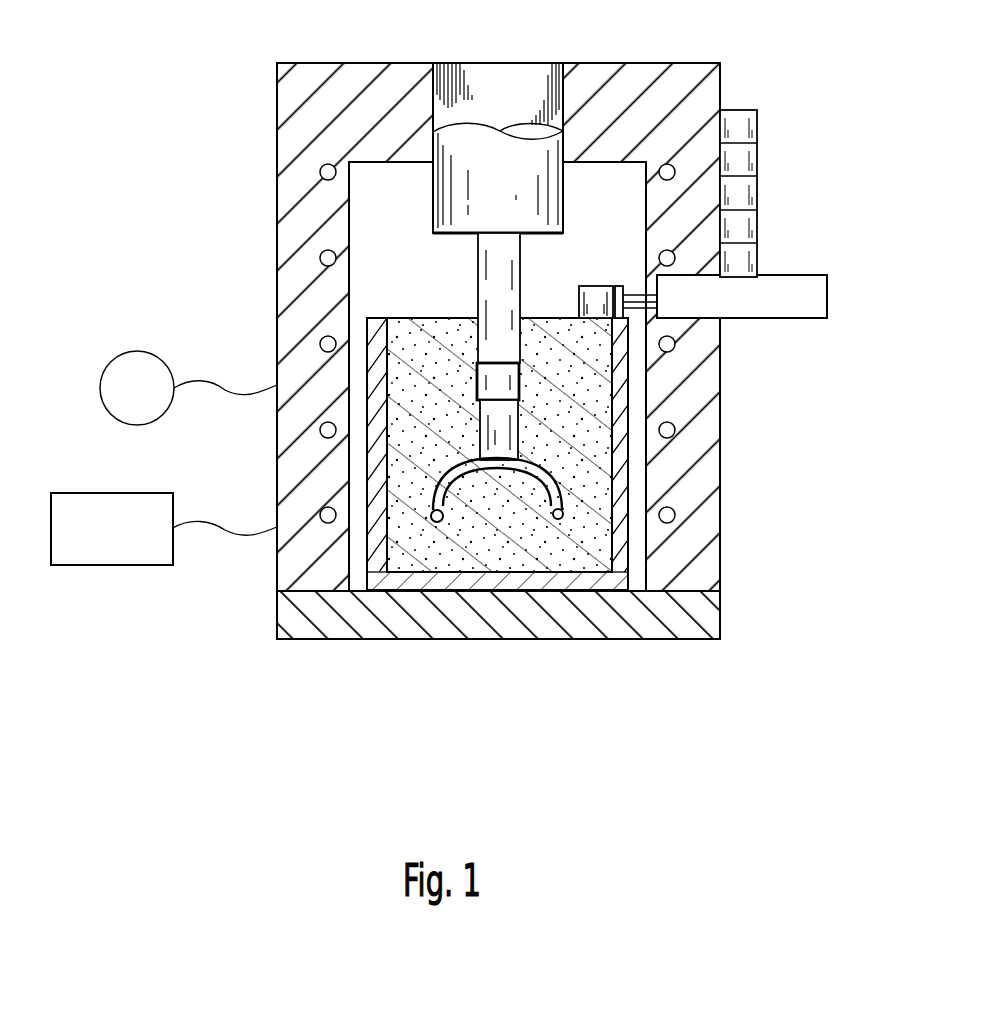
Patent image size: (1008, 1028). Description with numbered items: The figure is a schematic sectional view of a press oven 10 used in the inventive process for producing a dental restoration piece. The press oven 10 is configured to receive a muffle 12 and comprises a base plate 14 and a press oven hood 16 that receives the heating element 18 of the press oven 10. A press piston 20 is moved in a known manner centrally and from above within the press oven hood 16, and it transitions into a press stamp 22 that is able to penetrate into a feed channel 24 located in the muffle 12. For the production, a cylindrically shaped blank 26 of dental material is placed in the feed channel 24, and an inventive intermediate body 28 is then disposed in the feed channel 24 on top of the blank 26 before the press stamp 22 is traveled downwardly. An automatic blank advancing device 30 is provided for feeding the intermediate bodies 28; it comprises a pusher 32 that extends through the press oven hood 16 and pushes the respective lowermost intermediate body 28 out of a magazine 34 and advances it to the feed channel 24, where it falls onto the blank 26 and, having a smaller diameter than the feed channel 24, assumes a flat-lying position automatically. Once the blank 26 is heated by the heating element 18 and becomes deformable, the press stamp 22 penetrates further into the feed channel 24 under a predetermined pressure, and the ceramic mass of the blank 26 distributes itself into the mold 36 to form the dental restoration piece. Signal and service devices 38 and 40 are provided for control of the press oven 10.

The press oven 10 is at (752, 68).
The muffle 12 is at (590, 530).
The base plate 14 is at (318, 618).
The press oven hood 16 is at (344, 85).
The heating element 18 is at (676, 515).
The press piston 20 is at (482, 145).
The press stamp 22 is at (495, 272).
The feed channel 24 is at (492, 347).
The blank 26 is at (503, 412).
The intermediate body 28 is at (500, 375).
The blank advancing device 30 is at (770, 342).
The pusher 32 is at (803, 300).
The magazine 34 is at (800, 194).
The mold 36 is at (445, 525).
The signal and service device 38 is at (131, 408).
The signal and service device 40 is at (107, 550).